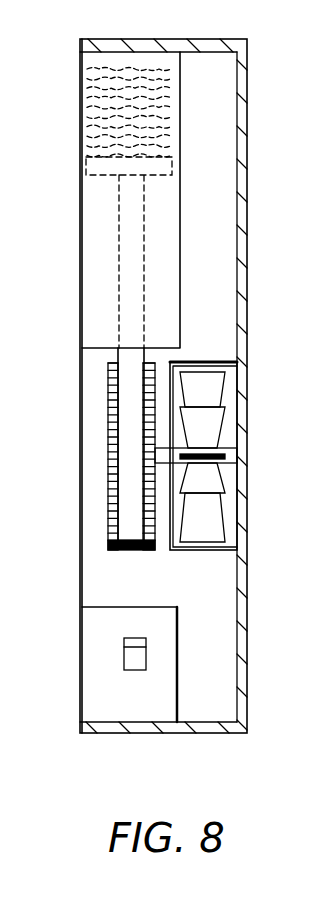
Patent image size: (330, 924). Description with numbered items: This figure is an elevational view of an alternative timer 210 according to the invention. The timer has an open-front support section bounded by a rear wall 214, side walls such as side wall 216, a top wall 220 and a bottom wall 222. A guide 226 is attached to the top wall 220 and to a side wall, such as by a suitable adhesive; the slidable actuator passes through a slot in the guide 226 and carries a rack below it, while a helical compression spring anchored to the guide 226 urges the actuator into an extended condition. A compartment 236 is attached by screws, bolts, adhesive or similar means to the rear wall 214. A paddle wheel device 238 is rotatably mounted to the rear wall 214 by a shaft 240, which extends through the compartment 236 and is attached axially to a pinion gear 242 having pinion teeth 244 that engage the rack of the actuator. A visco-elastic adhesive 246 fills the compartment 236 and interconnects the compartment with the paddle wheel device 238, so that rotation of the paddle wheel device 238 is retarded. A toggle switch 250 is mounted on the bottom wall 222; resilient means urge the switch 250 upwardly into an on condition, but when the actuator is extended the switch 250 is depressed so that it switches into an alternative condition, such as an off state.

The timer 210 is at (252, 43).
The rear wall 214 is at (247, 268).
The side wall 216 is at (97, 578).
The top wall 220 is at (163, 42).
The bottom wall 222 is at (135, 735).
The guide 226 is at (172, 106).
The compartment 236 is at (213, 362).
The paddle wheel device 238 is at (222, 425).
The shaft 240 is at (232, 458).
The pinion gear 242 is at (109, 428).
The pinion teeth 244 is at (110, 373).
The visco-elastic adhesive 246 is at (230, 515).
The toggle switch 250 is at (177, 648).